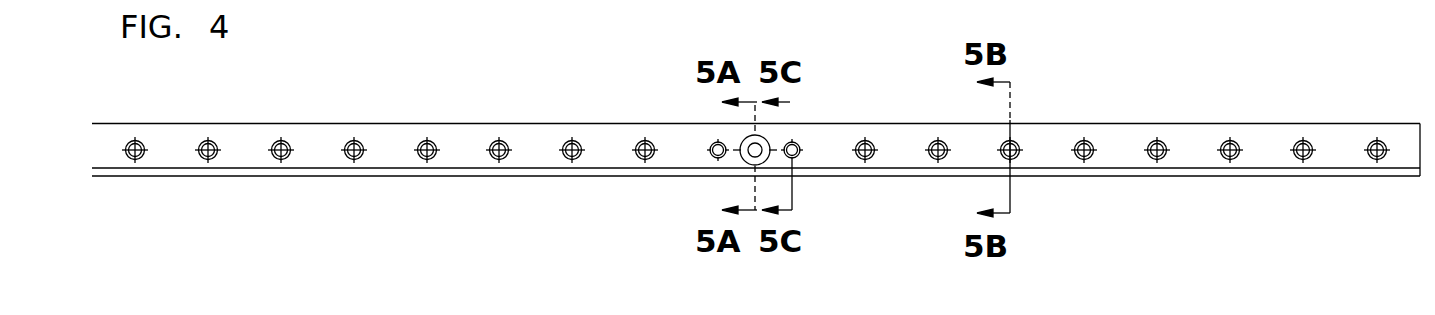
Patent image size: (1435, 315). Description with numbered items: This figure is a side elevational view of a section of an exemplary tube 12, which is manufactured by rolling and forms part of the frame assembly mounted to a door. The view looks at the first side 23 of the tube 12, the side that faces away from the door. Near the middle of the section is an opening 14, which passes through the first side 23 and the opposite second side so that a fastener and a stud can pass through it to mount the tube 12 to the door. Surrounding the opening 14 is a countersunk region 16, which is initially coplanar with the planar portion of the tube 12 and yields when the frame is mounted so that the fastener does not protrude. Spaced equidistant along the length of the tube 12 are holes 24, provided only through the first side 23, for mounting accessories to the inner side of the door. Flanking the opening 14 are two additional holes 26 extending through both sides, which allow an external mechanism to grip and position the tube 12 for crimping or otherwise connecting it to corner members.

The tube 12 is at (645, 83).
The opening 14 is at (766, 146).
The countersunk region 16 is at (759, 144).
The first side 23 is at (528, 142).
The holes 24 is at (1013, 143).
The holes 26 is at (715, 157).